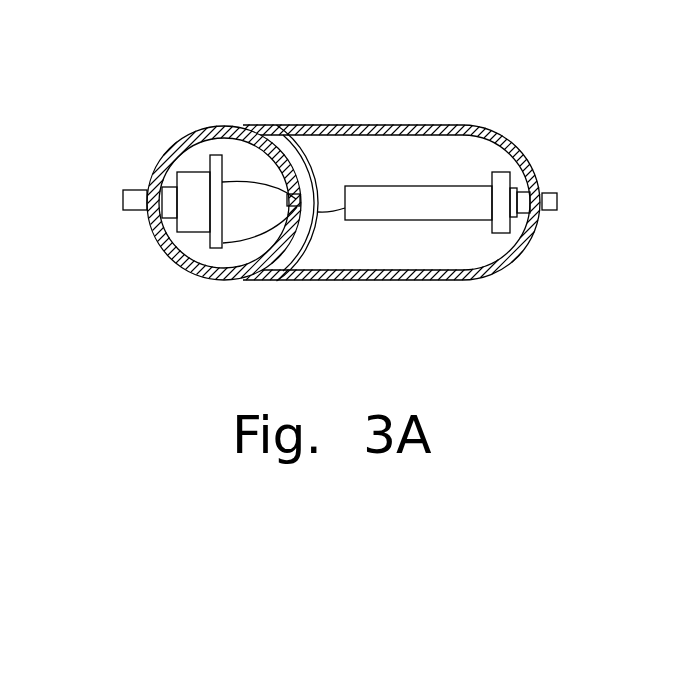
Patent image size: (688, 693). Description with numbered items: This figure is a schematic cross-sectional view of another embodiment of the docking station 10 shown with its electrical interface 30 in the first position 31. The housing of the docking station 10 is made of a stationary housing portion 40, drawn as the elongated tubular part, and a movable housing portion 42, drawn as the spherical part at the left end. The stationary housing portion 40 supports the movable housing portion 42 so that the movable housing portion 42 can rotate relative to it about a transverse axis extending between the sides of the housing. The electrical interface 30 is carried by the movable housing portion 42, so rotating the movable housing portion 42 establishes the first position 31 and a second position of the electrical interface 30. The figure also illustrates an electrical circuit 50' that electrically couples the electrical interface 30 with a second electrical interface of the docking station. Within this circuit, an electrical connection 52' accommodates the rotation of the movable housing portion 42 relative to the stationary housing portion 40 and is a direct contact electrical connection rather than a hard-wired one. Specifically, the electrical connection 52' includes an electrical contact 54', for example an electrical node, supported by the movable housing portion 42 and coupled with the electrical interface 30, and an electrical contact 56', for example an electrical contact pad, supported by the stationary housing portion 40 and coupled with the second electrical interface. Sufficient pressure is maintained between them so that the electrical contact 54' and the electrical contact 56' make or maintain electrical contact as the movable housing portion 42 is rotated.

The docking station 10 is at (537, 80).
The electrical interface 30 is at (125, 222).
The first position 31 is at (134, 197).
The stationary housing portion 40 is at (430, 130).
The movable housing portion 42 is at (208, 279).
The electrical circuit 50' is at (451, 253).
The electrical connection 52' is at (349, 143).
The electrical contact 54' is at (263, 215).
The electrical contact 56' is at (334, 203).